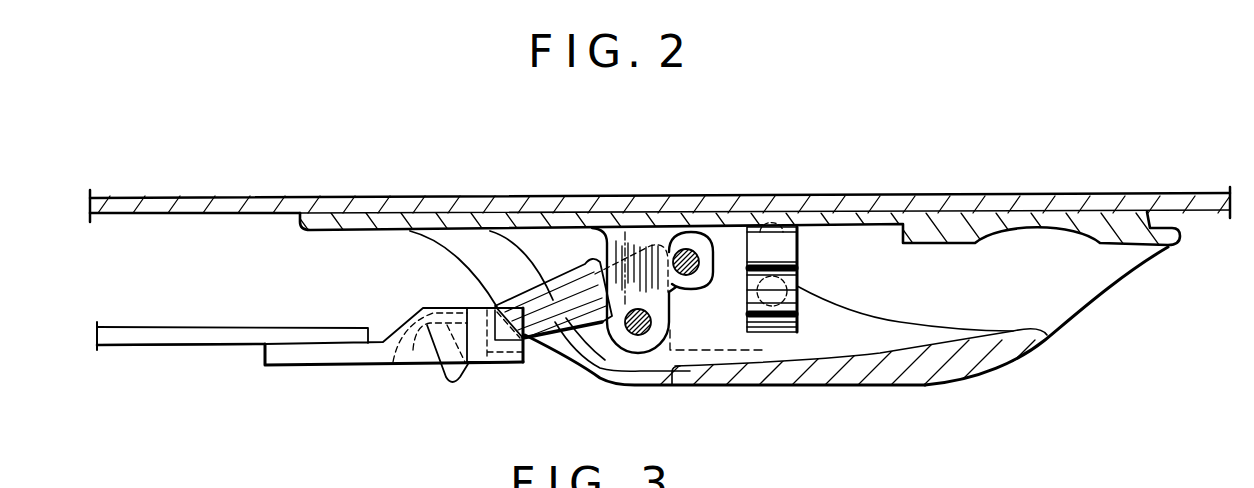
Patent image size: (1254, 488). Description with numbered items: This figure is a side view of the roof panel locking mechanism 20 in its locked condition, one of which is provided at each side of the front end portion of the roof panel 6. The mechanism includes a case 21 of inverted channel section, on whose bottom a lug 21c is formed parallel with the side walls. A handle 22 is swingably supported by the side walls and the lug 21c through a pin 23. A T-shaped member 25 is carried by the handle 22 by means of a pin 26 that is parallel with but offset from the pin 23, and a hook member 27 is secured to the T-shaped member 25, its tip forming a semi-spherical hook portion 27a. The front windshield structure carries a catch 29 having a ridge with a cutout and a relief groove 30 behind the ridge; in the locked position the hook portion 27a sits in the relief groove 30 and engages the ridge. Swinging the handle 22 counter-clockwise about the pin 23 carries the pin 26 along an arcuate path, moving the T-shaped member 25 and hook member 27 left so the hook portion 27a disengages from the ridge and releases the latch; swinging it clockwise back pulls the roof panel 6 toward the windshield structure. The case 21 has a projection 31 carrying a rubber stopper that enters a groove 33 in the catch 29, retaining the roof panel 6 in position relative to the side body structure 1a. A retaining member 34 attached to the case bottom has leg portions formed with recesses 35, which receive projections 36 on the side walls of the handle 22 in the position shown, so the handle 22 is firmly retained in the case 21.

The side body structure 1a is at (155, 340).
The roof panel 6 is at (676, 204).
The roof panel locking mechanism 20 is at (975, 386).
The case 21 is at (938, 222).
The lug 21c is at (626, 260).
The handle 22 is at (892, 372).
The pin 23 is at (672, 328).
The T-shaped member 25 is at (597, 256).
The pin 26 is at (692, 250).
The hook member 27 is at (598, 368).
The hook portion 27a is at (453, 385).
The catch 29 is at (345, 349).
The relief groove 30 is at (411, 350).
The projection 31 is at (559, 345).
The groove 33 is at (495, 300).
The retaining member 34 is at (799, 262).
The recesses 35 is at (800, 283).
The projections 36 is at (801, 323).